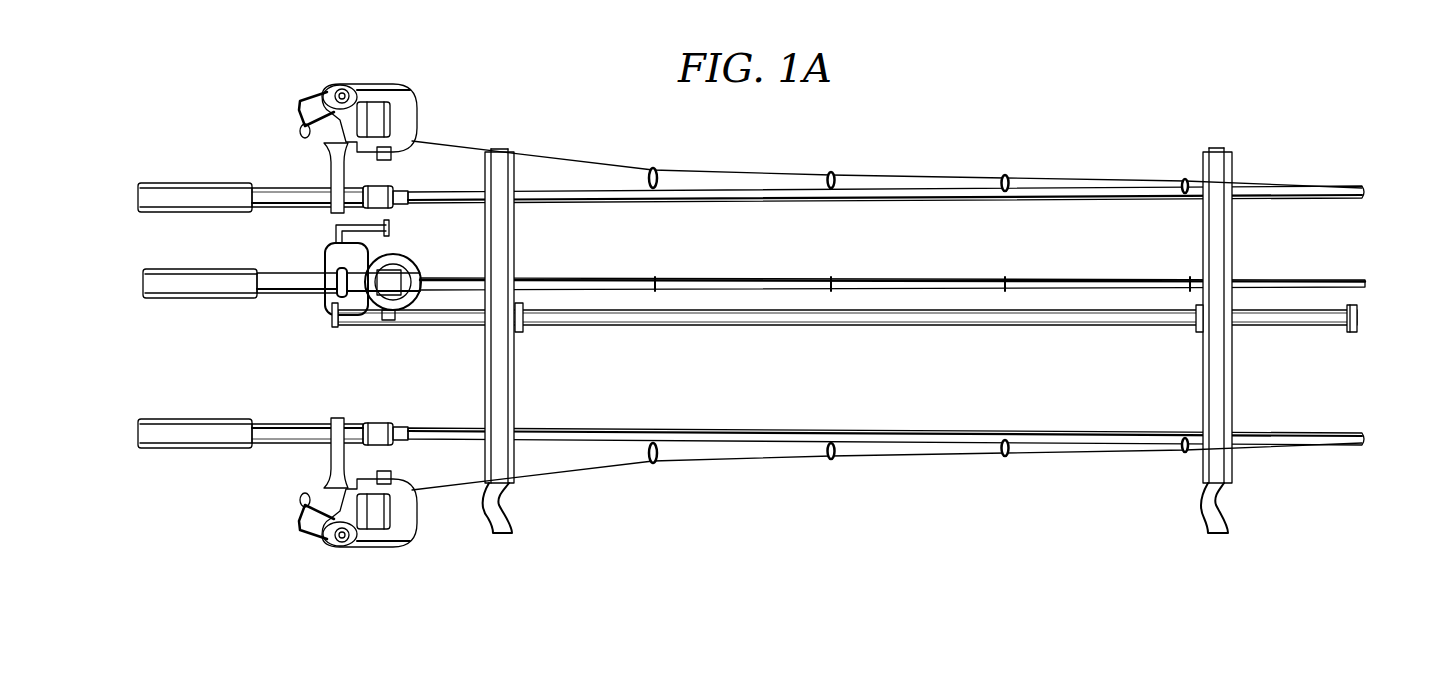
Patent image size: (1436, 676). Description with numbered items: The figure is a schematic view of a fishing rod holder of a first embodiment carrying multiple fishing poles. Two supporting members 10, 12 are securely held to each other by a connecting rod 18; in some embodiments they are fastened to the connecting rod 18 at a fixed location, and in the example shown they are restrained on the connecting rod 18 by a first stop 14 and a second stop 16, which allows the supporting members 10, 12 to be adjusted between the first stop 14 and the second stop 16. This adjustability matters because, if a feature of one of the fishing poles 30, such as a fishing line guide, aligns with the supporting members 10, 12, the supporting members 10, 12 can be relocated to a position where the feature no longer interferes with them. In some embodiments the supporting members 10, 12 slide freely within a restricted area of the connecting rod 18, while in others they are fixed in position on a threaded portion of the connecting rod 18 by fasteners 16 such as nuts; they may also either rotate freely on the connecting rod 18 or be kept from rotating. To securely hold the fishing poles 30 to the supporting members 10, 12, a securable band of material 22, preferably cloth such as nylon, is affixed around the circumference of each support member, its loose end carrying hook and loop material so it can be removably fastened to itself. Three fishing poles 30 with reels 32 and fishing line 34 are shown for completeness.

The supporting member 10 is at (485, 350).
The supporting member 12 is at (1233, 337).
The first stop 14 is at (331, 315).
The second stop 16 is at (521, 332).
The connecting rod 18 is at (920, 325).
The securable band of material 22 is at (1215, 153).
The fishing pole 30 is at (210, 182).
The reel 32 is at (352, 84).
The fishing line 34 is at (573, 160).